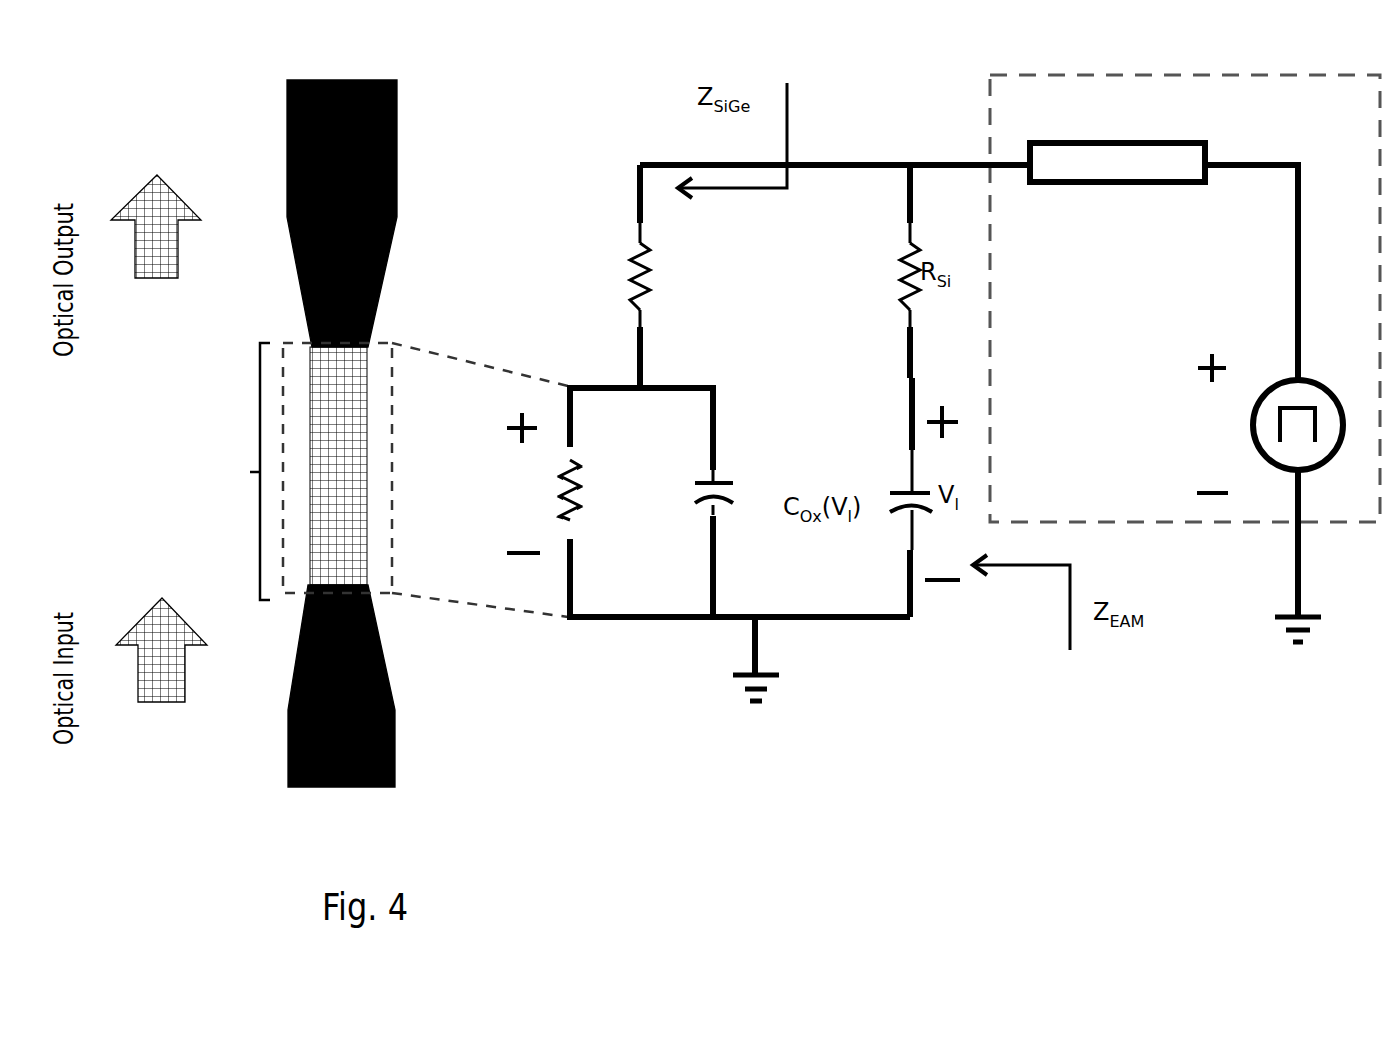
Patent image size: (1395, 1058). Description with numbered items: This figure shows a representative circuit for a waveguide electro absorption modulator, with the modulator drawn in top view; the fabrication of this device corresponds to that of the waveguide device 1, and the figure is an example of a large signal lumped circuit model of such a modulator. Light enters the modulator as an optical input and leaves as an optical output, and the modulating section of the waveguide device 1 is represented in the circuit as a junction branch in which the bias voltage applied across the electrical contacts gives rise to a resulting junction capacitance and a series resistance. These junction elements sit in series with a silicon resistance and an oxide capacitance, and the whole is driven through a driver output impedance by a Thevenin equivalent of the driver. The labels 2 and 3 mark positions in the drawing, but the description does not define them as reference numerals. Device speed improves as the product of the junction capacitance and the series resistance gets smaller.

The waveguide device 1 is at (800, 329).
The junction equivalent circuit 2 is at (707, 391).
The optical output 3 is at (254, 213).